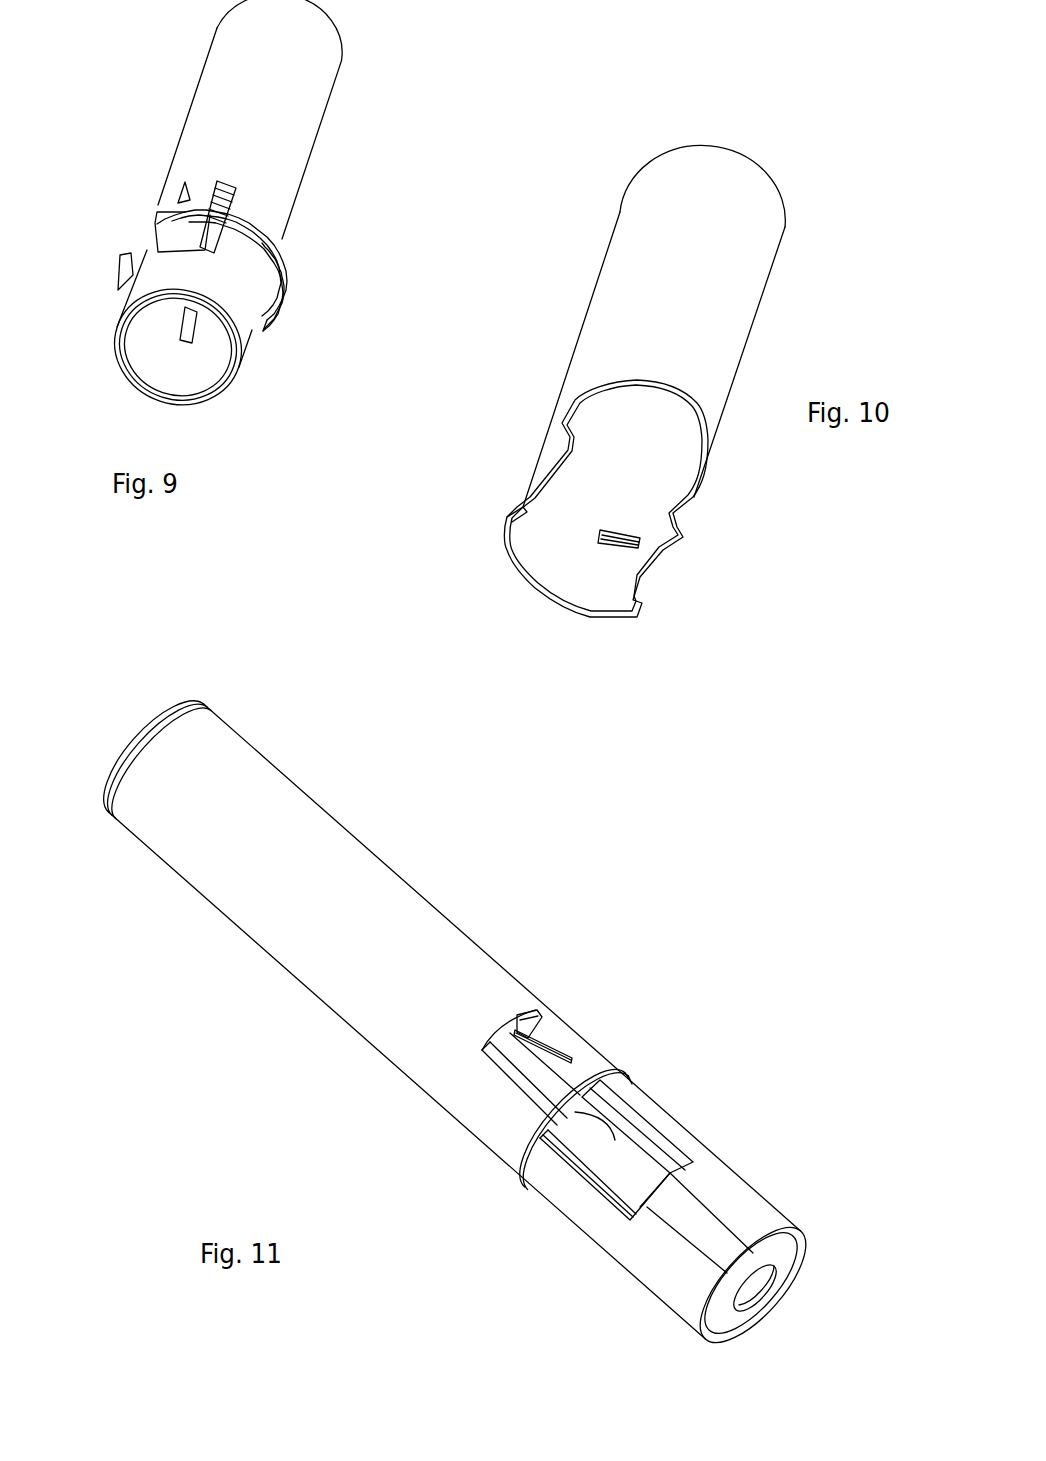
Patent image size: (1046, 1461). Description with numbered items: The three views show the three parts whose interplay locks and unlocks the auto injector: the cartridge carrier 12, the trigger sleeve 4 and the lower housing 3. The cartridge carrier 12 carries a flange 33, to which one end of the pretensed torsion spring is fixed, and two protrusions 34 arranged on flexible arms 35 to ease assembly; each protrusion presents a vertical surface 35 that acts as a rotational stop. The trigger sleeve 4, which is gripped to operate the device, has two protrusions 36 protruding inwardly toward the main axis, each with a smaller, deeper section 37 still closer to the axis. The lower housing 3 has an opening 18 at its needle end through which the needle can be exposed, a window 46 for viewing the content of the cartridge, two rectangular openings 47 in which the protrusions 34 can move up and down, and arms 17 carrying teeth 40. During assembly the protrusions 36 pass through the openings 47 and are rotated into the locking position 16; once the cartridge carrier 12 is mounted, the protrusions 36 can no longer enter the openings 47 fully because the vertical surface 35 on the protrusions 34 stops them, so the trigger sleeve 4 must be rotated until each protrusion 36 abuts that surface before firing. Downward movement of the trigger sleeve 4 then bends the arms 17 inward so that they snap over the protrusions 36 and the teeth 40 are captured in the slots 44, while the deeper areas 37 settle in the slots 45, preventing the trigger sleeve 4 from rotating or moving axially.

In FIG. 11, the lower housing 3 is at (382, 831).
In FIG. 10, the trigger sleeve 4 is at (613, 208).
In FIG. 9, the cartridge carrier 12 is at (183, 102).
In FIG. 11, the locking position 16 is at (540, 1015).
In FIG. 11, the arms 17 is at (540, 1050).
In FIG. 11, the opening 18 is at (733, 1300).
In FIG. 9, the flange 33 is at (262, 263).
In FIG. 9, the protrusions 34 is at (165, 228).
In FIG. 9, the vertical surface 35 is at (217, 212).
In FIG. 10, the protrusions 36 is at (640, 543).
In FIG. 10, the smaller section 37 is at (600, 533).
In FIG. 11, the teeth 40 is at (543, 1028).
In FIG. 11, the slots 44 is at (540, 1037).
In FIG. 11, the slots 45 is at (540, 1042).
In FIG. 11, the window 46 is at (590, 1192).
In FIG. 11, the rectangular openings 47 is at (505, 1065).